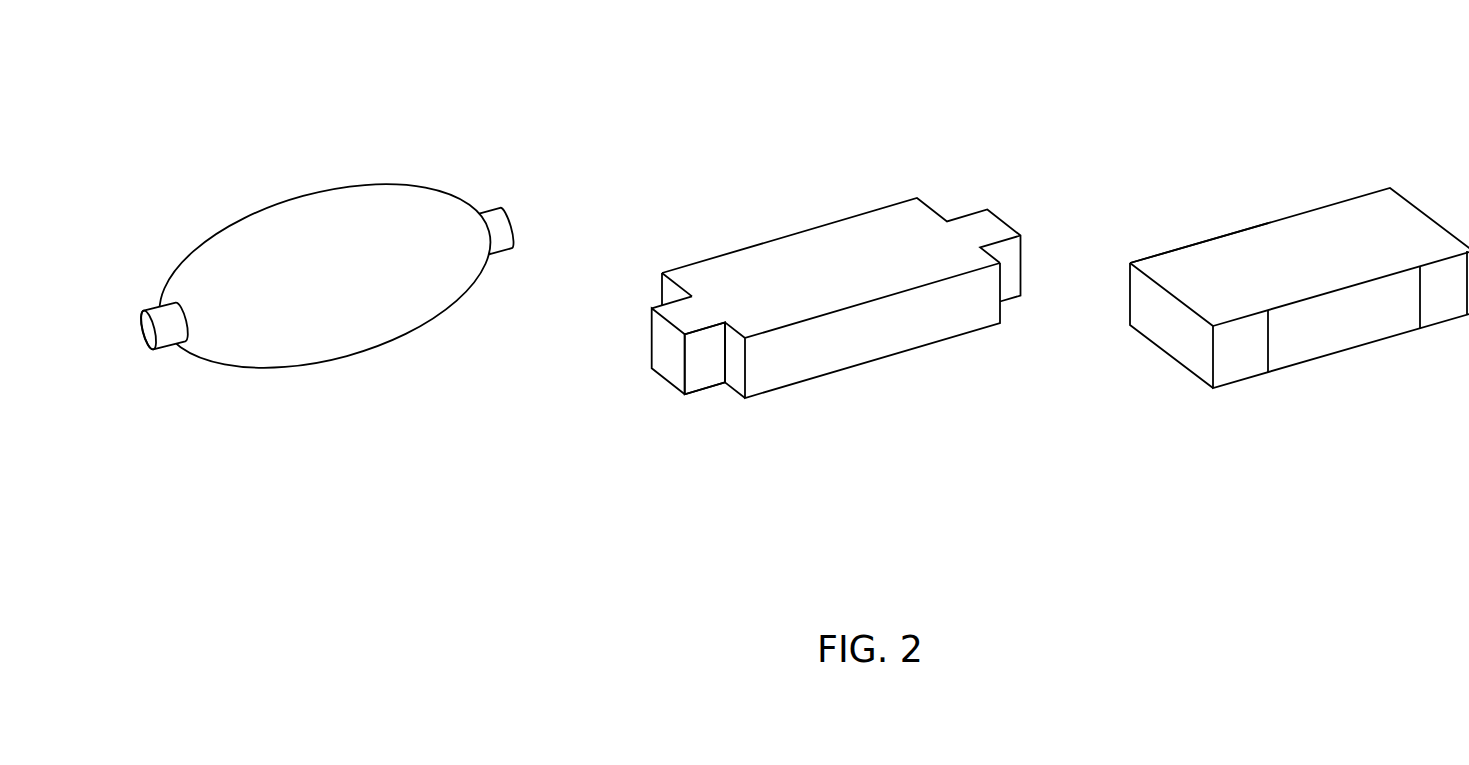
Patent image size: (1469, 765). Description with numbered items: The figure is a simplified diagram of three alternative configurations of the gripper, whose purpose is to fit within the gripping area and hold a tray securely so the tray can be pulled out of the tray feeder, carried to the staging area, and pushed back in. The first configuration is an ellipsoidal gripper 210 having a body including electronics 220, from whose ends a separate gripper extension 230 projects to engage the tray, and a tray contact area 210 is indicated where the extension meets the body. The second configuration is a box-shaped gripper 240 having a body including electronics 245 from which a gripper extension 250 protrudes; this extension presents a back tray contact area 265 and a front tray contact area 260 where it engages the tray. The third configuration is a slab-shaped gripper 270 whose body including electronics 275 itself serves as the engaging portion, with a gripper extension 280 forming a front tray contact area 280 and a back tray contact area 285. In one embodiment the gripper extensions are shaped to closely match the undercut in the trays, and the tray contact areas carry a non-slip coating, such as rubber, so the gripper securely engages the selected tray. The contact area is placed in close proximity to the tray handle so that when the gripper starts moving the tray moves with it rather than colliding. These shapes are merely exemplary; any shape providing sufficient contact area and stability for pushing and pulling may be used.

The gripper 210 is at (306, 307).
The body of the gripper 220 is at (295, 186).
The gripper extension 230 is at (141, 352).
The gripper 240 is at (779, 326).
The body of the gripper 245 is at (797, 192).
The gripper extension 250 is at (702, 362).
The tray contact area 260 is at (698, 369).
The tray contact area 265 is at (648, 307).
The gripper 270 is at (1263, 306).
The body of the gripper 275 is at (1308, 173).
The tray contact area 280 is at (1237, 328).
The tray contact area 285 is at (1163, 170).